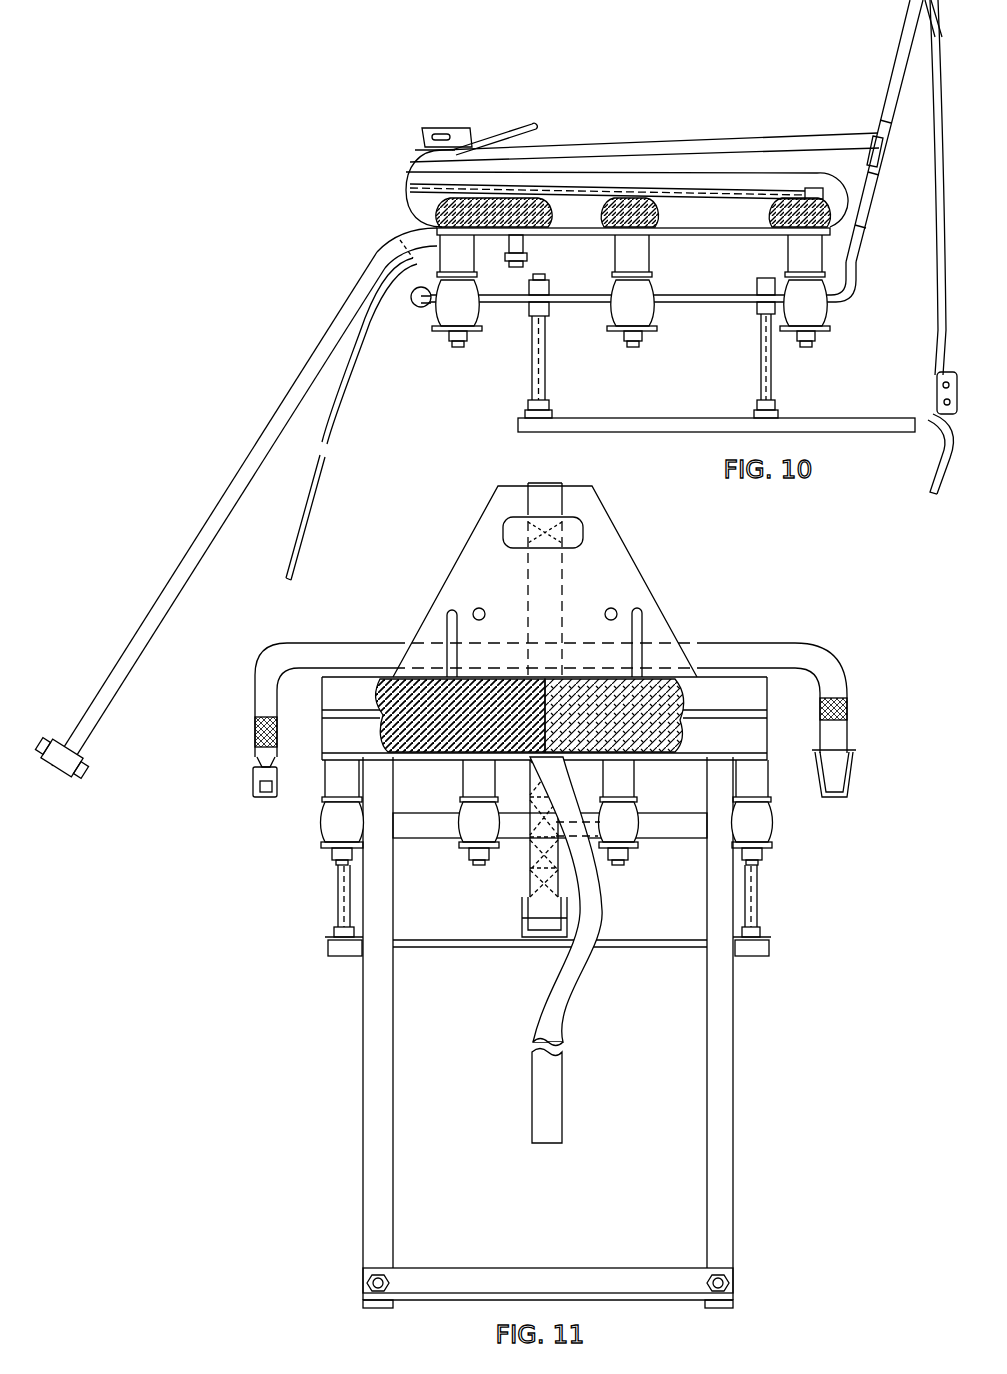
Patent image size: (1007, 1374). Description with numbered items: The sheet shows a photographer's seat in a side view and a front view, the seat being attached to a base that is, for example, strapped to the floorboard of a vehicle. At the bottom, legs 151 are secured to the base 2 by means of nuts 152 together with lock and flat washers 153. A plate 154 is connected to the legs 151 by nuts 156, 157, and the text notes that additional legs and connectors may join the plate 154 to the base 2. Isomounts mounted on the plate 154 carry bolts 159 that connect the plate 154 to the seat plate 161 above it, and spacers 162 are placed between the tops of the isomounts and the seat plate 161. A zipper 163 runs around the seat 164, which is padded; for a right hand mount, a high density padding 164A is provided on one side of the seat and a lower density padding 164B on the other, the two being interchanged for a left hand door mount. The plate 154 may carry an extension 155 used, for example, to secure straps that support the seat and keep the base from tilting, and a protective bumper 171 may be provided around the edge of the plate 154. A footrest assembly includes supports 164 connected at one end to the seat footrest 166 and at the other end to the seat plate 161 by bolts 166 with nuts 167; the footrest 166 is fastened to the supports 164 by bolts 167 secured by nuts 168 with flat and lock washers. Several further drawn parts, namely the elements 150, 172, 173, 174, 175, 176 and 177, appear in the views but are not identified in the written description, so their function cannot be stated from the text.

In FIG. 10, the base 2 is at (672, 418).
In FIG. 10, the air spring 150 is at (652, 312).
In FIG. 10, the legs 151 is at (546, 353).
In FIG. 10, the nuts 152 is at (550, 403).
In FIG. 10, the lock and flat washers 153 is at (553, 415).
In FIG. 10, the plate 154 is at (708, 294).
In FIG. 10, the extension 155 is at (887, 89).
In FIG. 11, the extension 155 is at (453, 565).
In FIG. 10, the nut 156 is at (549, 306).
In FIG. 10, the nut 157 is at (550, 287).
In FIG. 10, the bolts 159 is at (457, 349).
In FIG. 10, the seat plate 161 is at (582, 229).
In FIG. 10, the spacers 162 is at (403, 258).
In FIG. 10, the zipper 163 is at (458, 180).
In FIG. 10, the seat 164 is at (548, 172).
In FIG. 11, the seat 164 is at (363, 1061).
In FIG. 11, the high density padding 164A is at (497, 683).
In FIG. 11, the lower density padding 164B is at (583, 680).
In FIG. 10, the seat footrest 166 is at (528, 264).
In FIG. 11, the seat footrest 166 is at (526, 1267).
In FIG. 10, the bolts 167 is at (524, 258).
In FIG. 11, the bolts 167 is at (368, 1279).
In FIG. 10, the nuts 168 is at (88, 766).
In FIG. 10, the protective bumper 171 is at (411, 306).
In FIG. 10, the hose 172 is at (320, 484).
In FIG. 11, the hose 172 is at (578, 1000).
In FIG. 10, the seat belt 173 is at (934, 315).
In FIG. 10, the belt anchor 174 is at (936, 400).
In FIG. 11, the belt anchor 174 is at (522, 921).
In FIG. 11, the belt buckle 175 is at (252, 778).
In FIG. 11, the belt latch 176 is at (855, 783).
In FIG. 11, the seat belt band 177 is at (770, 639).